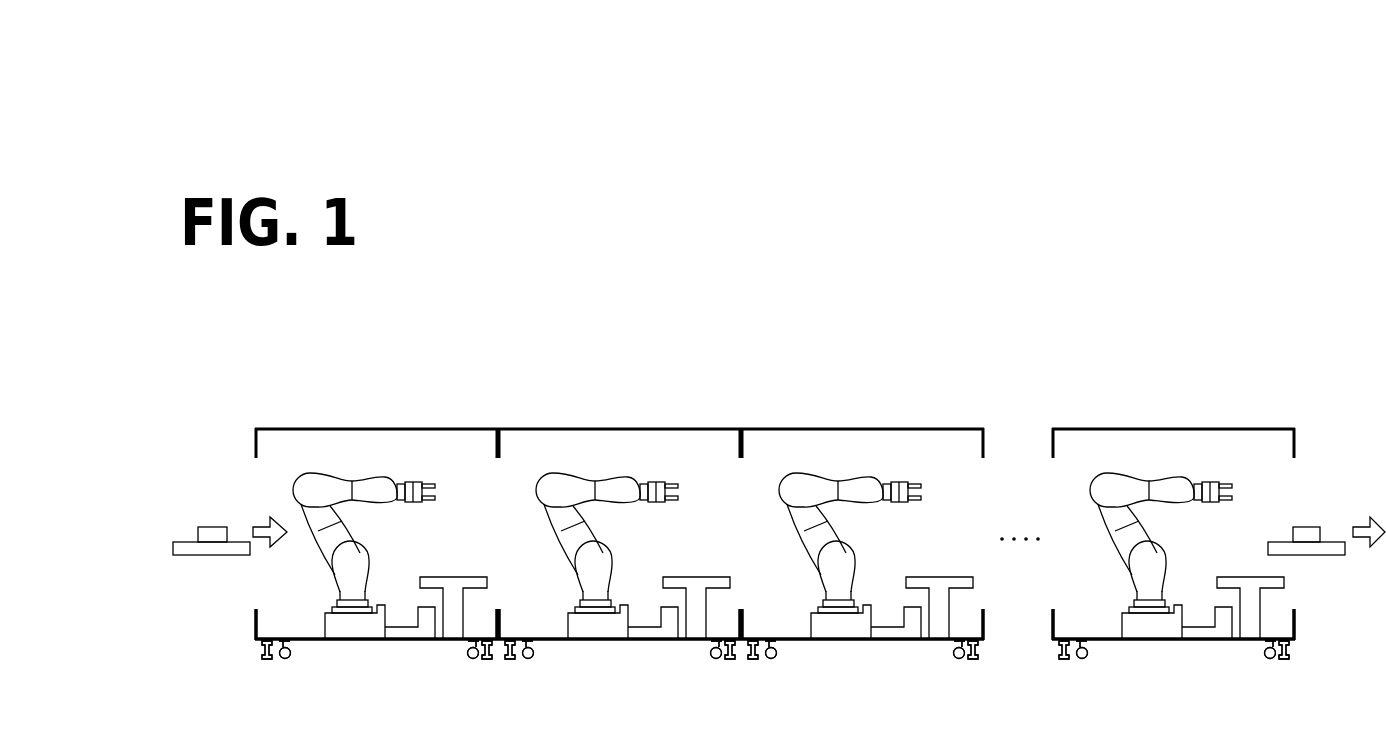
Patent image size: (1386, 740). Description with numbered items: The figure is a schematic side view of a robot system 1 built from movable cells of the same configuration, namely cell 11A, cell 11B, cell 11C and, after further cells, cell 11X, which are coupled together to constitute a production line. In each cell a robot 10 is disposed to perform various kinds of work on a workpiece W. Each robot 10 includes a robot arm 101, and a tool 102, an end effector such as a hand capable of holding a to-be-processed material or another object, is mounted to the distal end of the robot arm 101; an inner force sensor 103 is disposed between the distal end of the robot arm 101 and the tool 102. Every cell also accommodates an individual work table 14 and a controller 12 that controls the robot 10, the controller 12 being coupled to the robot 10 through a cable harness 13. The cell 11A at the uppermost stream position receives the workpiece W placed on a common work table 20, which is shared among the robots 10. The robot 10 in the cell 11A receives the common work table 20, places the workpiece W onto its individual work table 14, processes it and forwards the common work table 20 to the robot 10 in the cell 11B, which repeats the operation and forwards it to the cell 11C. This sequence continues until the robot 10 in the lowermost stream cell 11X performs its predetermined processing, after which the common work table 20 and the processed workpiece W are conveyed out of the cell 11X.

The robot system 1 is at (1195, 318).
The robot 10 is at (748, 514).
The robot arm 101 is at (729, 556).
The tool 102 is at (812, 519).
The inner force sensor 103 is at (780, 467).
The cell 11A is at (376, 505).
The cell 11B is at (619, 505).
The cell 11C is at (862, 505).
The cell 11X is at (1173, 505).
The controller 12 is at (775, 651).
The cable harness 13 is at (808, 607).
The individual work table 14 is at (852, 582).
The common work table 20 is at (215, 556).
The workpiece W is at (207, 527).